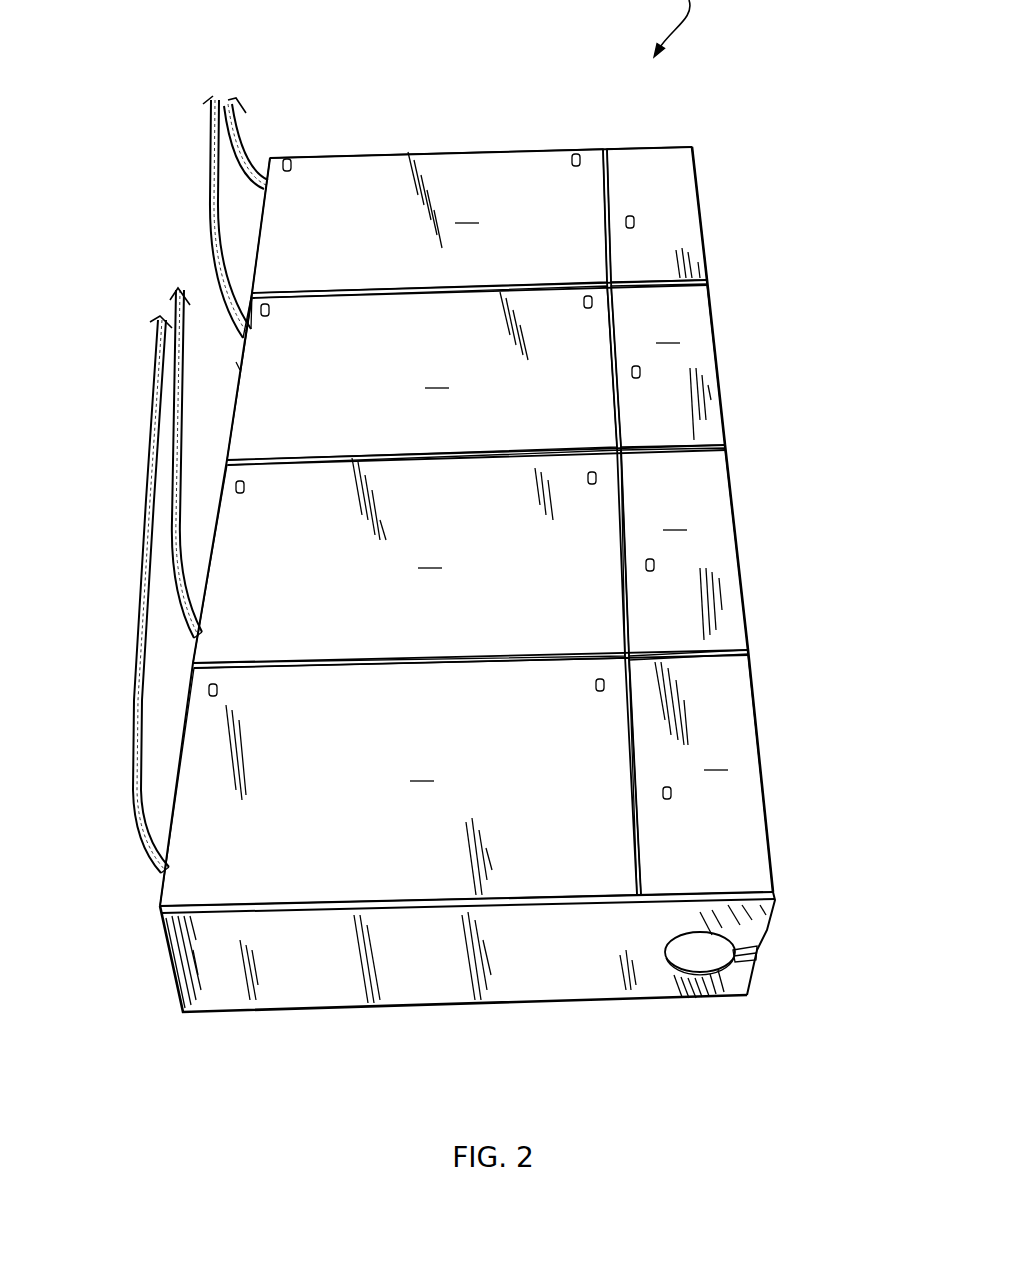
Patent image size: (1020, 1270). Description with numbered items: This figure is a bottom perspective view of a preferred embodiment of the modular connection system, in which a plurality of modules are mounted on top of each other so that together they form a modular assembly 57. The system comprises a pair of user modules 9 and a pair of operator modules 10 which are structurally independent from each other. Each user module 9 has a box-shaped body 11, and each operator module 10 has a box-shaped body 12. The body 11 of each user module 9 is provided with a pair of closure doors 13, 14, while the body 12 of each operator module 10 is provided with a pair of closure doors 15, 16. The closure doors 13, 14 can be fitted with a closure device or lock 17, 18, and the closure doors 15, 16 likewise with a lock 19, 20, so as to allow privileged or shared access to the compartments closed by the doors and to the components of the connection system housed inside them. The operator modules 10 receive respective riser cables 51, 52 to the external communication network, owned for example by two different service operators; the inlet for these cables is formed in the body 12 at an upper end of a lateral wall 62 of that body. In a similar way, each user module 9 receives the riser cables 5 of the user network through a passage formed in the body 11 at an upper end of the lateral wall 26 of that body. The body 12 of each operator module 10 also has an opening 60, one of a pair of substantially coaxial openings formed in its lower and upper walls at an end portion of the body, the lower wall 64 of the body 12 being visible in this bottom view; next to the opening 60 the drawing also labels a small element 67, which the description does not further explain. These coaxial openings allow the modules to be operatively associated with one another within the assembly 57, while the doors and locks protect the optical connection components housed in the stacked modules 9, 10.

The riser cables of the user network 5 is at (208, 165).
The user module 9 is at (712, 210).
The operator module 10 is at (752, 565).
The box-shaped body 11 is at (503, 180).
The box-shaped body 12 is at (515, 610).
The closure door 13 is at (422, 304).
The closure door 14 is at (672, 170).
The closure door 15 is at (398, 678).
The closure door 16 is at (697, 671).
The lock 17 is at (578, 155).
The lock 18 is at (636, 222).
The lock 19 is at (592, 490).
The lock 20 is at (650, 574).
The lateral wall 26 is at (258, 238).
The riser cable 51 is at (180, 463).
The riser cable 52 is at (137, 718).
The modular assembly 57 is at (758, 430).
The opening 60 is at (731, 998).
The lateral wall 62 is at (213, 533).
The lower wall 64 is at (290, 968).
The outlet flap 67 is at (760, 962).